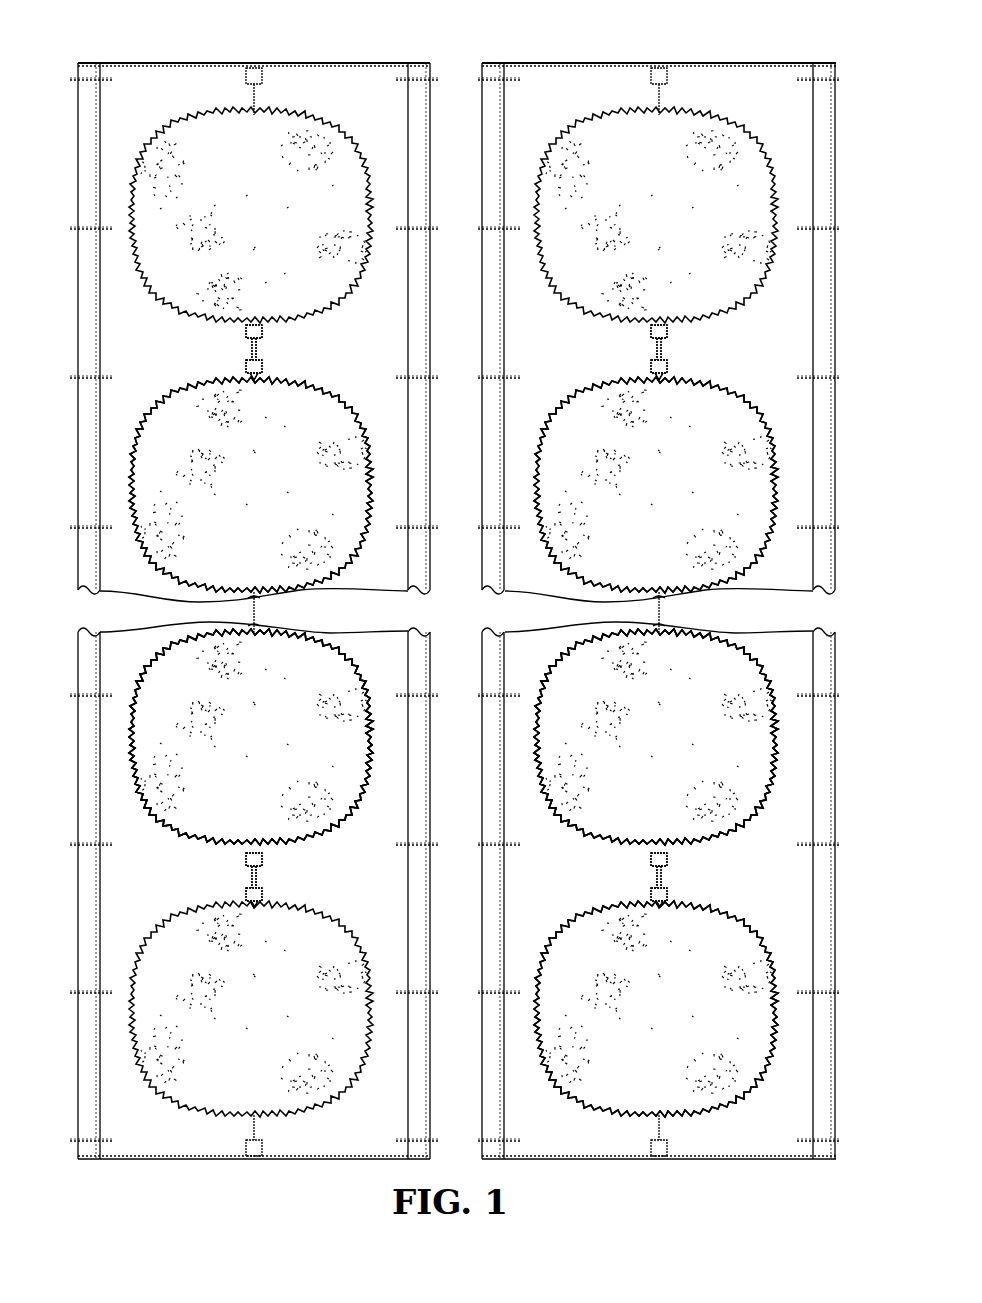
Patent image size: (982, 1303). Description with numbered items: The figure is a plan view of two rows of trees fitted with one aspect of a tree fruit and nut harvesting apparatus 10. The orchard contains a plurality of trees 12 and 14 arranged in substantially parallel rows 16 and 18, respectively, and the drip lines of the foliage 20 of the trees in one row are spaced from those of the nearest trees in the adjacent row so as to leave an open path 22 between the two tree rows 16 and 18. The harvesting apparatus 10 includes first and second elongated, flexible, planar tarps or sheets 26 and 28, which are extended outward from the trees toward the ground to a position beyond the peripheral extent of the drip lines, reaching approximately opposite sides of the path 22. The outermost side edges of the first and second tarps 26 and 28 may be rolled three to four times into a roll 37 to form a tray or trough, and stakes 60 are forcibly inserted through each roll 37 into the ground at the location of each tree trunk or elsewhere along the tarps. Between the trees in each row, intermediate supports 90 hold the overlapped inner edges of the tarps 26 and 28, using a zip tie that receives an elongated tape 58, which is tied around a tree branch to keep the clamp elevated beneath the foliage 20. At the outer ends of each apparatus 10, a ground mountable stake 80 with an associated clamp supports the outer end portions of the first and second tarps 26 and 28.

The tree fruit and nut harvesting apparatus 10 is at (248, 62).
The trees 12 is at (207, 295).
The trees 14 is at (622, 295).
The first tree row 16 is at (142, 432).
The second tree row 18 is at (778, 432).
The foliage 20 is at (706, 838).
The open path 22 is at (466, 615).
The first tarp 26 is at (136, 655).
The second tarp 28 is at (372, 655).
The roll 37 is at (84, 276).
The strip or tape member 58 is at (250, 352).
The stakes 60 is at (82, 79).
The ground mountable stake 80 is at (246, 74).
The intermediate support 90 is at (265, 352).